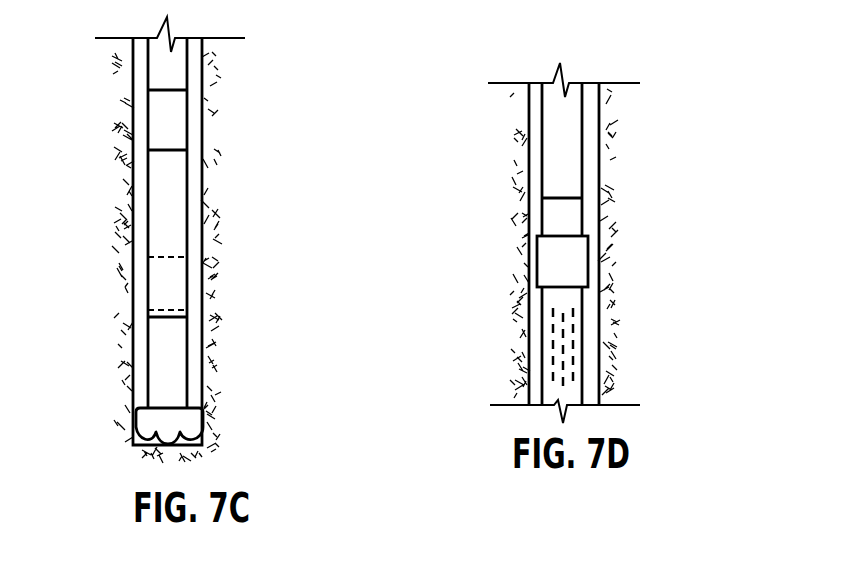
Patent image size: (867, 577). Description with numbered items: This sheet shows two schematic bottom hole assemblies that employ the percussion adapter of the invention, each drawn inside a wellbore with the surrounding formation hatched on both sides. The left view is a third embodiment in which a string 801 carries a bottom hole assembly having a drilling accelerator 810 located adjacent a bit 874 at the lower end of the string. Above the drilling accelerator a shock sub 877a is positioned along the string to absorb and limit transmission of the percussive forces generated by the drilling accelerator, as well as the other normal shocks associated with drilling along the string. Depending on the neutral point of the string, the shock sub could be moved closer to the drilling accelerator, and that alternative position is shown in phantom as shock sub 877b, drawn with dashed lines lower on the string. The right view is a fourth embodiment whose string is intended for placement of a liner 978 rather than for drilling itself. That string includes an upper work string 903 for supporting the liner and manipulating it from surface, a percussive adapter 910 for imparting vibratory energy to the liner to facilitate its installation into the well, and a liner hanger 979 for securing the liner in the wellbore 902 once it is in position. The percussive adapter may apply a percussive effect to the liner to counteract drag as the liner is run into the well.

In FIG. 7C, the string 801 is at (160, 202).
In FIG. 7C, the shock sub 877a is at (177, 114).
In FIG. 7C, the shock sub 877b is at (175, 277).
In FIG. 7C, the drilling accelerator 810 is at (168, 344).
In FIG. 7C, the bit 874 is at (188, 418).
In FIG. 7D, the wellbore 902 is at (525, 338).
In FIG. 7D, the upper work string 903 is at (570, 153).
In FIG. 7D, the percussive adapter 910 is at (568, 218).
In FIG. 7D, the liner hanger 979 is at (568, 273).
In FIG. 7D, the liner 978 is at (568, 328).